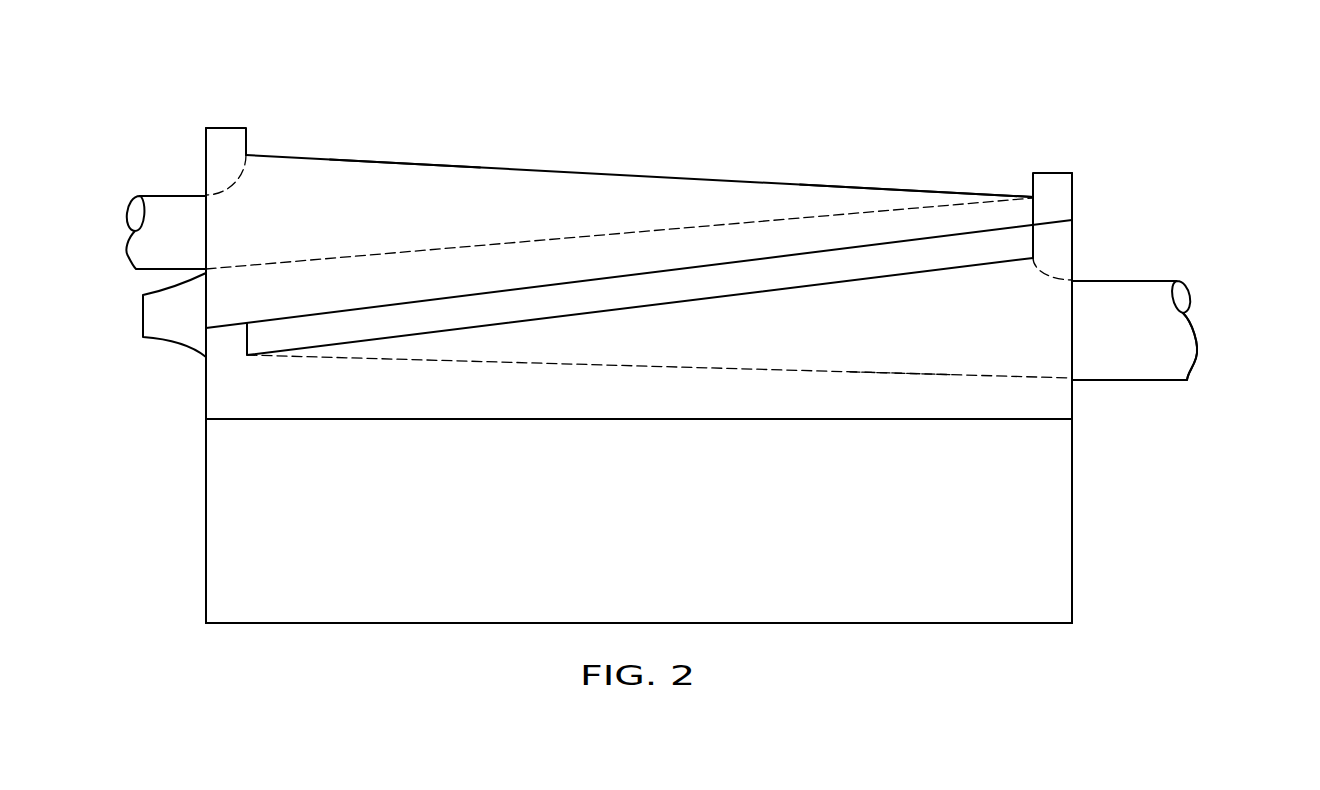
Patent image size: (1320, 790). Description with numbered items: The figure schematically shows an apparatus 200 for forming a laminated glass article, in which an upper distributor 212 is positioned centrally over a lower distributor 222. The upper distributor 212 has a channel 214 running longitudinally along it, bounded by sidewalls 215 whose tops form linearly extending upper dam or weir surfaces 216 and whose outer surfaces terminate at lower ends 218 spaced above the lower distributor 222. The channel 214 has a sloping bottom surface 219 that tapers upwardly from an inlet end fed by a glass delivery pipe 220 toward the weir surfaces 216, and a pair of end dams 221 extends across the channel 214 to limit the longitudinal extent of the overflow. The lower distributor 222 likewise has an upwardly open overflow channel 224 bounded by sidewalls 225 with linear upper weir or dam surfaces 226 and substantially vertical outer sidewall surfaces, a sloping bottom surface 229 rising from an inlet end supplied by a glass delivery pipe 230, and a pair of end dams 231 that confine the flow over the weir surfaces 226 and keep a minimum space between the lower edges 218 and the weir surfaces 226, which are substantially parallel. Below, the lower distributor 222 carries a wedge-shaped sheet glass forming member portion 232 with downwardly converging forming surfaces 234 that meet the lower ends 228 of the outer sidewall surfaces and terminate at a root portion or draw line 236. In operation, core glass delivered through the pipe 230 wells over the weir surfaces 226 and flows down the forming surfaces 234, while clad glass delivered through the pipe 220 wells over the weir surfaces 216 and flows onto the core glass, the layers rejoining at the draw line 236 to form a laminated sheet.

The apparatus 200 is at (1157, 148).
The upper distributor 212 is at (292, 160).
The channel 214 is at (853, 195).
The sidewalls 215 is at (378, 182).
The upper dam or weir surfaces 216 is at (938, 188).
The lower ends 218 is at (977, 235).
The sloping bottom surface 219 is at (458, 262).
The glass delivery pipe 220 is at (160, 196).
The end dams 221 is at (222, 128).
The lower distributor 222 is at (259, 400).
The overflow channel 224 is at (691, 345).
The sidewalls 225 is at (1060, 339).
The upper weir or dam surfaces 226 is at (377, 337).
The lower ends 228 is at (778, 420).
The sloping bottom surface 229 is at (921, 373).
The glass delivery pipe 230 is at (1197, 355).
The end dams 231 is at (223, 342).
The wedge-shaped sheet glass forming member portion 232 is at (225, 524).
The converging forming surfaces 234 is at (1053, 556).
The root portion or draw line 236 is at (980, 623).